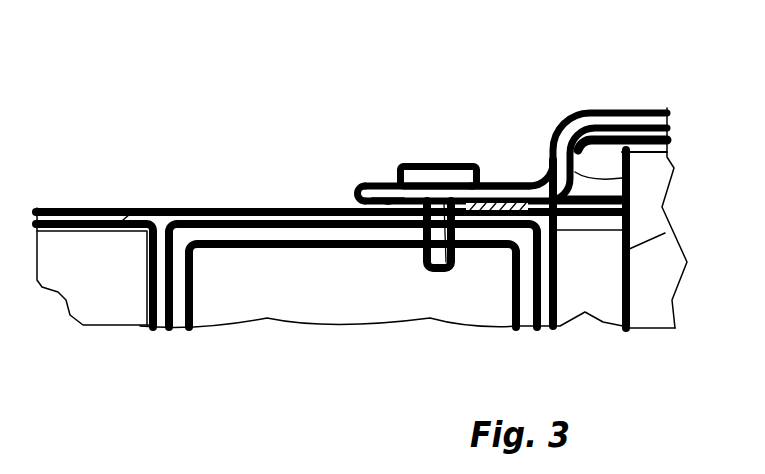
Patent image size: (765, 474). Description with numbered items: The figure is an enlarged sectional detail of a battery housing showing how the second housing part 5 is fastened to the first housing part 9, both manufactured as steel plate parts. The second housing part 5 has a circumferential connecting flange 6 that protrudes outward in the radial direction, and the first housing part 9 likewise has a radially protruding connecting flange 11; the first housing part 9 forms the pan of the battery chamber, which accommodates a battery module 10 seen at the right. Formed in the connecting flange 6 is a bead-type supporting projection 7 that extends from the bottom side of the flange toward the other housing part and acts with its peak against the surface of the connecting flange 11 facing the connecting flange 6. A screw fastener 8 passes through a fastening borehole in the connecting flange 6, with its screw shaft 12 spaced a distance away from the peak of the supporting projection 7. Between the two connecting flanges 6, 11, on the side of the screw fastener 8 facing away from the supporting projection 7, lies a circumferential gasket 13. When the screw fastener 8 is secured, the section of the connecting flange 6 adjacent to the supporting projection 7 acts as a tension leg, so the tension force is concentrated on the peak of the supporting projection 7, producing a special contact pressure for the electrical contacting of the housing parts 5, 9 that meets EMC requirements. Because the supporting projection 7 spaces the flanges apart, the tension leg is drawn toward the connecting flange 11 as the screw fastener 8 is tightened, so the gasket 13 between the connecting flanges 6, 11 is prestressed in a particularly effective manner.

The second housing part 5 is at (611, 113).
The connecting flange 6 is at (493, 183).
The supporting projection 7 is at (367, 202).
The screw fastener 8 is at (432, 162).
The first housing part 9 is at (557, 253).
The battery module 10 is at (669, 278).
The connecting flange 11 is at (472, 232).
The screw shaft 12 is at (415, 247).
The circumferential gasket 13 is at (515, 195).